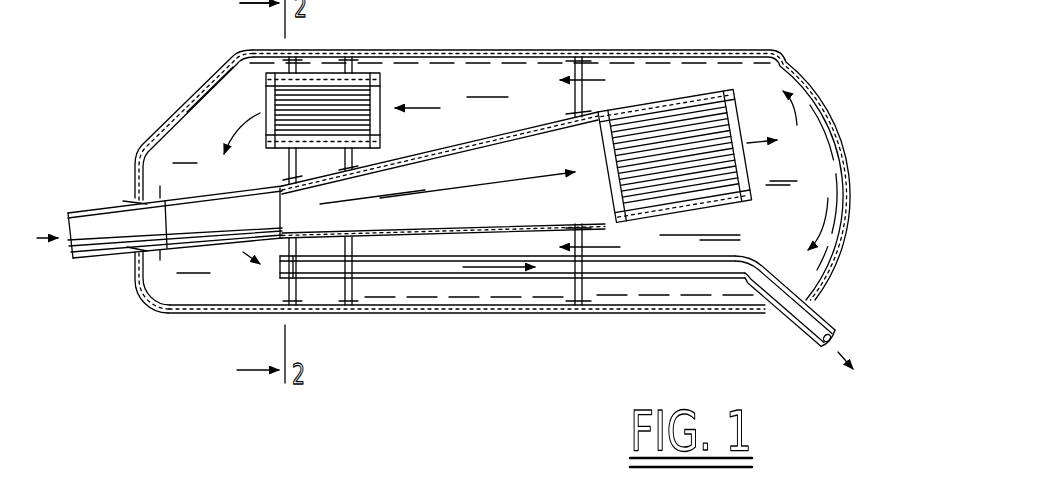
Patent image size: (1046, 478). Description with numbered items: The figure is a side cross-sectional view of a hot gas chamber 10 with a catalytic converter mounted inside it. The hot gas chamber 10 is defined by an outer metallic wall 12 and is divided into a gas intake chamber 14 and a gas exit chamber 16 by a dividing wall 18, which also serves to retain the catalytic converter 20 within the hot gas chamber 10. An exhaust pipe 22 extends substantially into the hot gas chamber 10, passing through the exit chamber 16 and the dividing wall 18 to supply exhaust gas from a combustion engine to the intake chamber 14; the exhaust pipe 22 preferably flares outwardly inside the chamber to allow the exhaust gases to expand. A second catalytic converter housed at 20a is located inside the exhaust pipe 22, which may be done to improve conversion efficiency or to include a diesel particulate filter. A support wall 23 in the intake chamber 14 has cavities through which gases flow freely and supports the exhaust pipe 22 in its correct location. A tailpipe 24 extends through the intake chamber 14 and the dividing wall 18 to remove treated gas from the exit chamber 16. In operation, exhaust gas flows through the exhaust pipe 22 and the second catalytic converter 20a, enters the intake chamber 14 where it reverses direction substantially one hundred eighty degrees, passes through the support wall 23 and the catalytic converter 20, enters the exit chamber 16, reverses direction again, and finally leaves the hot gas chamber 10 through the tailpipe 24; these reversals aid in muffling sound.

The hot gas chamber 10 is at (538, 321).
The outer metallic wall 12 is at (713, 50).
The gas intake chamber 14 is at (507, 82).
The gas exit chamber 16 is at (197, 117).
The dividing wall 18 is at (295, 282).
The catalytic converter 20 is at (357, 97).
The second catalytic converter 20a is at (727, 117).
The exhaust pipe 22 is at (100, 214).
The support wall 23 is at (580, 77).
The tailpipe 24 is at (833, 327).